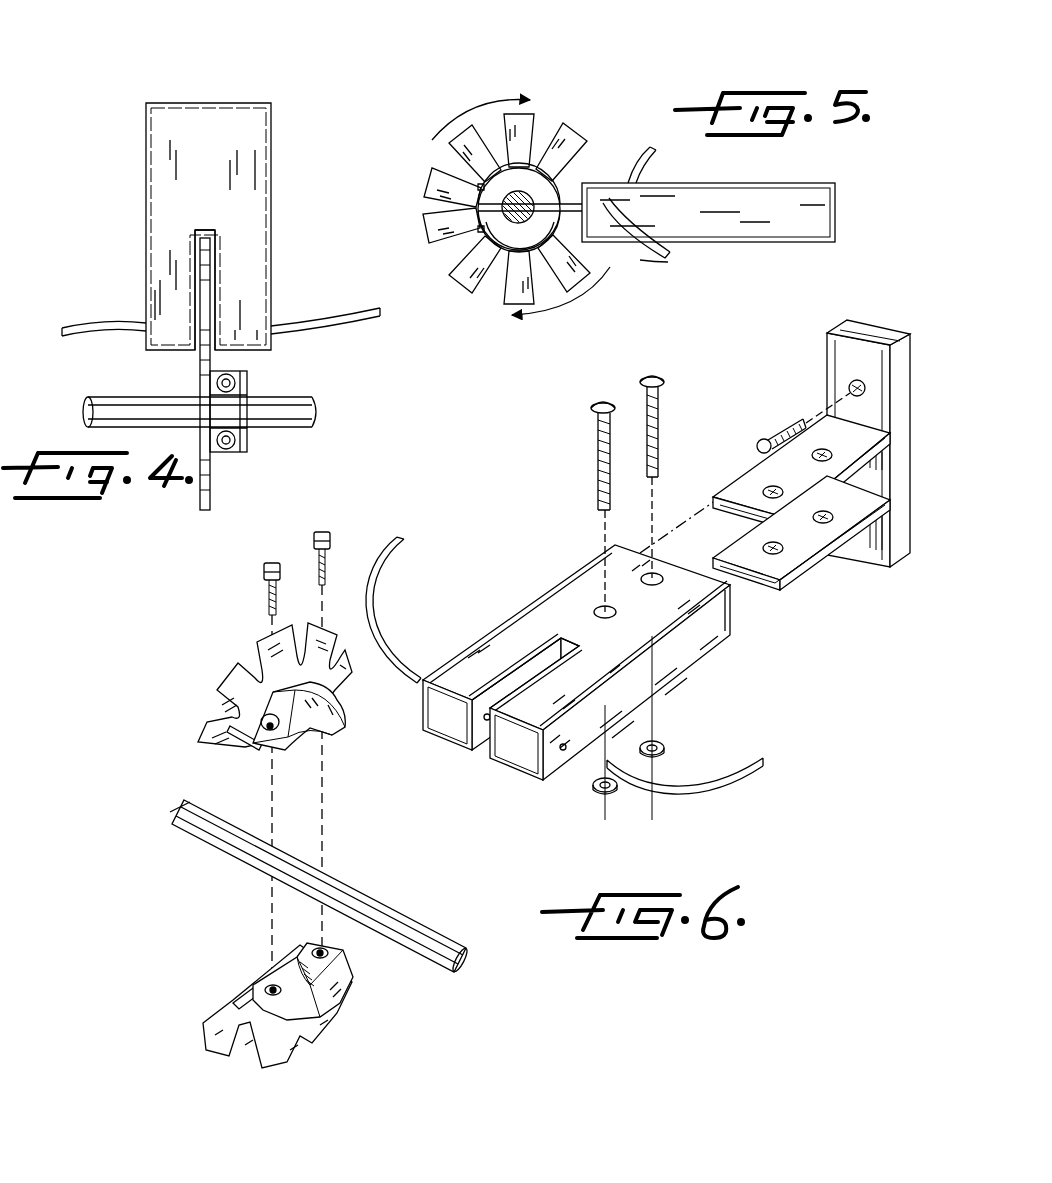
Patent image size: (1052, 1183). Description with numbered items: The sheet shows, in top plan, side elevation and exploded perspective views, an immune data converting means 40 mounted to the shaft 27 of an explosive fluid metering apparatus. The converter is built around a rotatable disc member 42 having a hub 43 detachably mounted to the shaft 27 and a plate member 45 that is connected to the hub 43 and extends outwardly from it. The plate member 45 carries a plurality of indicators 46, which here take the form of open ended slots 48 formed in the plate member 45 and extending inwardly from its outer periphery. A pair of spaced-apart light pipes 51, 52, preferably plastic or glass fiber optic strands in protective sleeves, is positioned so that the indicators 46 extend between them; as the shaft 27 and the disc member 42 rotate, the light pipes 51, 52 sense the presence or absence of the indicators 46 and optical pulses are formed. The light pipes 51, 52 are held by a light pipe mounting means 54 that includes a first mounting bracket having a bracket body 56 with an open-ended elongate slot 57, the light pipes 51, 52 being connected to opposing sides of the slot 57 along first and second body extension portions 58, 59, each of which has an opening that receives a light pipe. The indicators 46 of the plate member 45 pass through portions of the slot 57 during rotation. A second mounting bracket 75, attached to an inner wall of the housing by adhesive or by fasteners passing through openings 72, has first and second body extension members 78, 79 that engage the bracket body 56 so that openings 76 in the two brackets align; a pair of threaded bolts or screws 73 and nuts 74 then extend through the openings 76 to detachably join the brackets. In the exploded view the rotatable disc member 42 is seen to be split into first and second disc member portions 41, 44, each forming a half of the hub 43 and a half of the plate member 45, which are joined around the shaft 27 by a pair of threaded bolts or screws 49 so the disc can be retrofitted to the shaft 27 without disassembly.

In FIG. 4, the shaft 27 is at (315, 410).
In FIG. 5, the shaft 27 is at (522, 224).
In FIG. 6, the shaft 27 is at (440, 970).
In FIG. 4, the immune data converting means 40 is at (95, 188).
In FIG. 5, the immune data converting means 40 is at (432, 112).
In FIG. 6, the immune data converting means 40 is at (468, 835).
In FIG. 6, the first disc member portion 41 is at (178, 723).
In FIG. 5, the rotatable disc member 42 is at (615, 122).
In FIG. 4, the hub 43 is at (247, 420).
In FIG. 5, the hub 43 is at (497, 235).
In FIG. 6, the hub 43 is at (345, 717).
In FIG. 6, the second disc member portion 44 is at (213, 1063).
In FIG. 4, the plate member 45 is at (205, 505).
In FIG. 5, the plate member 45 is at (536, 160).
In FIG. 6, the plate member 45 is at (240, 748).
In FIG. 5, the indicators 46 is at (548, 162).
In FIG. 5, the open ended slots 48 is at (500, 162).
In FIG. 6, the open ended slots 48 is at (262, 672).
In FIG. 6, the threaded bolts or screws 49 is at (277, 560).
In FIG. 4, the light pipe 51 is at (338, 318).
In FIG. 5, the light pipe 51 is at (650, 262).
In FIG. 6, the light pipe 51 is at (740, 740).
In FIG. 4, the light pipe 52 is at (110, 322).
In FIG. 5, the light pipe 52 is at (656, 168).
In FIG. 6, the light pipe 52 is at (372, 608).
In FIG. 6, the light pipe mounting means 54 is at (820, 672).
In FIG. 4, the bracket body 56 is at (222, 199).
In FIG. 5, the bracket body 56 is at (812, 226).
In FIG. 6, the bracket body 56 is at (576, 662).
In FIG. 4, the elongate slot 57 is at (205, 255).
In FIG. 6, the elongate slot 57 is at (556, 650).
In FIG. 4, the first body extension portion 58 is at (254, 324).
In FIG. 5, the first body extension portion 58 is at (660, 222).
In FIG. 6, the first body extension portion 58 is at (582, 702).
In FIG. 4, the second body extension portion 59 is at (182, 326).
In FIG. 6, the second body extension portion 59 is at (540, 652).
In FIG. 6, the openings 72 is at (858, 383).
In FIG. 6, the threaded bolts or screws 73 is at (656, 378).
In FIG. 6, the nuts 74 is at (649, 782).
In FIG. 6, the second mounting bracket 75 is at (802, 420).
In FIG. 6, the openings 76 is at (645, 575).
In FIG. 6, the first body extension member 78 is at (735, 497).
In FIG. 6, the second body extension member 79 is at (767, 572).